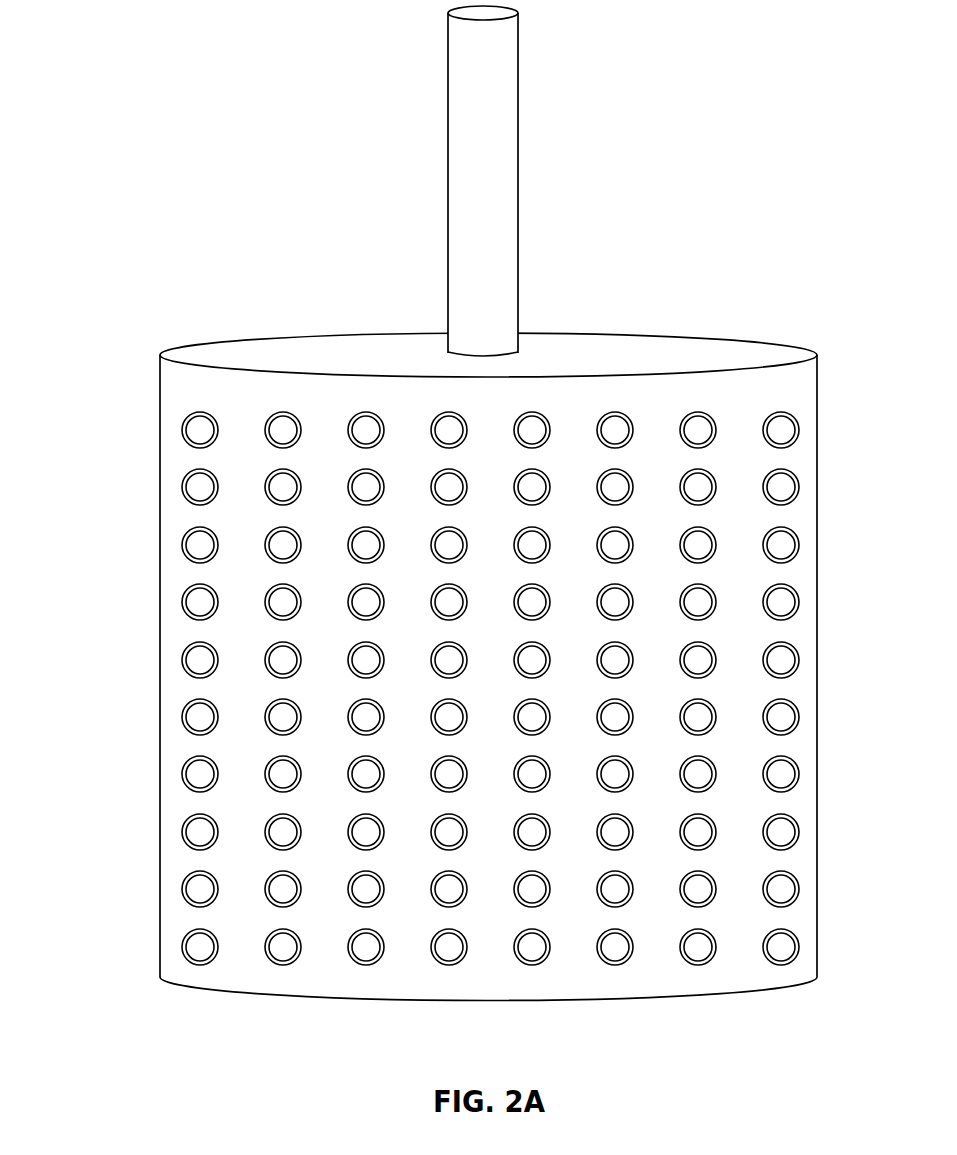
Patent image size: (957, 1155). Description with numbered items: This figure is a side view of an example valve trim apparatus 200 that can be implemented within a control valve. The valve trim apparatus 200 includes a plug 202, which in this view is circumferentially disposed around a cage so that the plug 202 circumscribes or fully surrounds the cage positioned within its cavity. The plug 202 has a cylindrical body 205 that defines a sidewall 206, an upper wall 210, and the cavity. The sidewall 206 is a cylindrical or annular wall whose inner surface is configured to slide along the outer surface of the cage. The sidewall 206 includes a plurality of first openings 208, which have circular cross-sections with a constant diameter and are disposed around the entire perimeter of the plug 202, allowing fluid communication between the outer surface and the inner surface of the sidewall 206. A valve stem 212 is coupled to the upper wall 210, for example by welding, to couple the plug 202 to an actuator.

The valve trim apparatus 200 is at (62, 114).
The plug 202 is at (645, 335).
The body 205 is at (160, 353).
The sidewall 206 is at (818, 505).
The first openings 208 is at (196, 600).
The upper wall 210 is at (276, 336).
The valve stem 212 is at (447, 220).